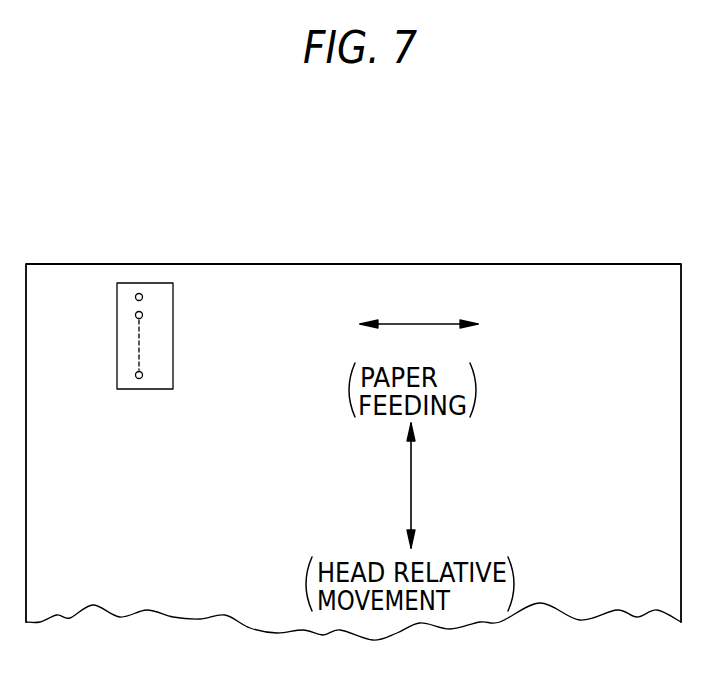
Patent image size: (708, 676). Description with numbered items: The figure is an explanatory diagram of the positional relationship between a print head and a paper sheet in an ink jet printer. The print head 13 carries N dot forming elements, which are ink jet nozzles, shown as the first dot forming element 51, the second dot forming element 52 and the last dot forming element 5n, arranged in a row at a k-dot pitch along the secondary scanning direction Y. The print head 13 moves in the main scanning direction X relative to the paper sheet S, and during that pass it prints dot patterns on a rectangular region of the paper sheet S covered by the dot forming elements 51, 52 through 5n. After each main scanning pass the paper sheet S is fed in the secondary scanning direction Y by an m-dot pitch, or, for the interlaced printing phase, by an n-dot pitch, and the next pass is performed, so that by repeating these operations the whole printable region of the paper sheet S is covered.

The print head 13 is at (117, 312).
The dot forming element 51 is at (143, 297).
The dot forming element 52 is at (143, 316).
The dot forming element 5n is at (143, 376).
The paper sheet S is at (444, 264).
The main scanning direction X is at (388, 322).
The secondary scanning direction Y is at (412, 480).